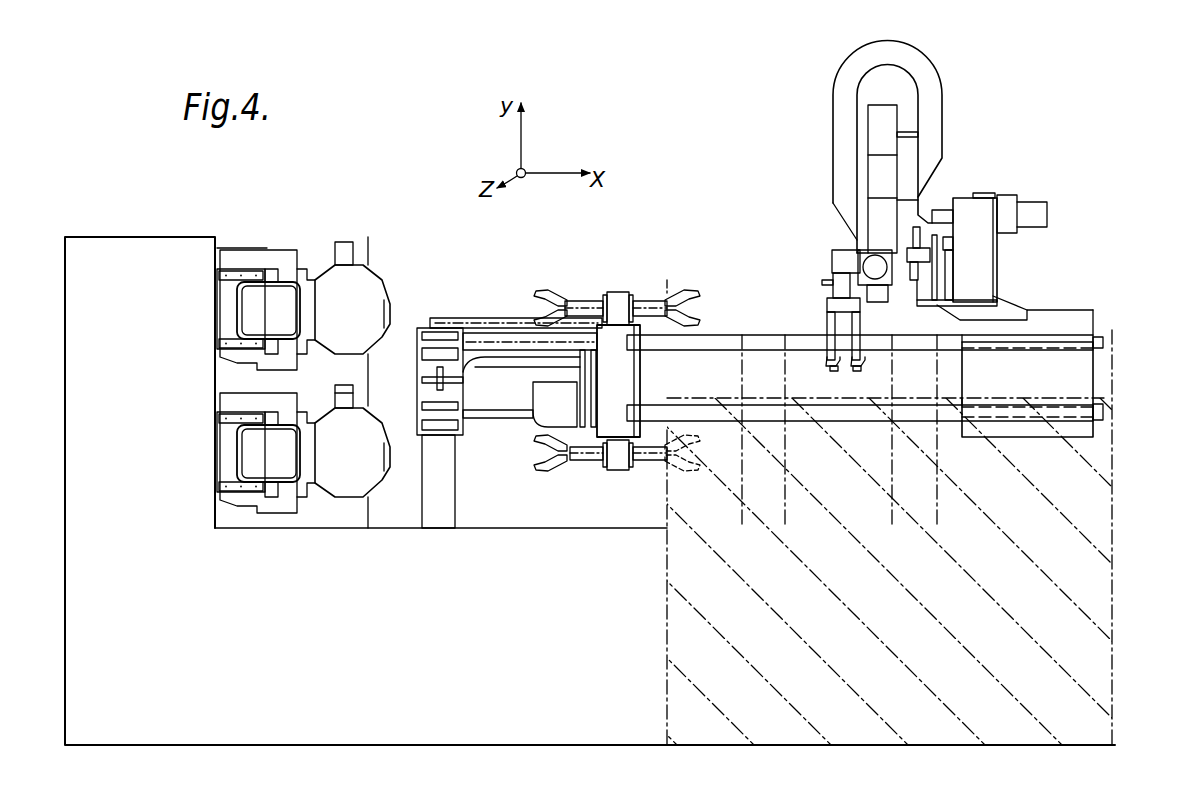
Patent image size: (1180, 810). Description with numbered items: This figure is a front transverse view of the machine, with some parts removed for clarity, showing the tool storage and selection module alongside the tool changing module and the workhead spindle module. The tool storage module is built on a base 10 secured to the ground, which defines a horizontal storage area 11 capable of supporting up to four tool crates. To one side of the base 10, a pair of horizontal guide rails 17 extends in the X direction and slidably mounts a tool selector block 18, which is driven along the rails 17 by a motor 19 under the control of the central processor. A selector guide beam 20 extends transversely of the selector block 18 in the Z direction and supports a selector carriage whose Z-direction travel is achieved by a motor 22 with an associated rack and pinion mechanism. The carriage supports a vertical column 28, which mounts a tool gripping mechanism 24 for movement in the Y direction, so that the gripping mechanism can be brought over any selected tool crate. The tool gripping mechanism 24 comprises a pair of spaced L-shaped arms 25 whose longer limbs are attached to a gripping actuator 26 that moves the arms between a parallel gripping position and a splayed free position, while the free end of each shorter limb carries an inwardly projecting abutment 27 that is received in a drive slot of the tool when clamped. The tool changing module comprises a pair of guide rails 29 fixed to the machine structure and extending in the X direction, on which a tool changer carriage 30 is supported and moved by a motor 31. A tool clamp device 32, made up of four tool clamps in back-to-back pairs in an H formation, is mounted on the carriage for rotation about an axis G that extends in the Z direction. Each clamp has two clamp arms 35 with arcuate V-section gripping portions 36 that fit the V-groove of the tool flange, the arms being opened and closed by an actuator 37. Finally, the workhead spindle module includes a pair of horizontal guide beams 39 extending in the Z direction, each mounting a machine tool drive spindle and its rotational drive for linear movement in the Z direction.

The base 10 is at (1063, 610).
The horizontal storage area 11 is at (1054, 383).
The horizontal guide rails 17 is at (687, 412).
The tool selector block 18 is at (1028, 362).
The motor 19 is at (1096, 360).
The selector guide beam 20 is at (927, 270).
The motor 22 is at (1033, 207).
The tool gripping mechanism 24 is at (817, 310).
The L-shaped arms 25 is at (822, 356).
The gripping actuator 26 is at (830, 283).
The inwardly projecting abutment 27 is at (831, 364).
The vertical column 28 is at (882, 169).
The guide rails 29 is at (503, 343).
The tool changer carriage 30 is at (580, 367).
The motor 31 is at (555, 405).
The tool clamp device 32 is at (585, 468).
The clamp arms 35 is at (571, 293).
The arcuate gripping portions 36 is at (540, 302).
The actuator 37 is at (592, 305).
The horizontal guide beams 39 is at (257, 305).
The axis G is at (618, 380).